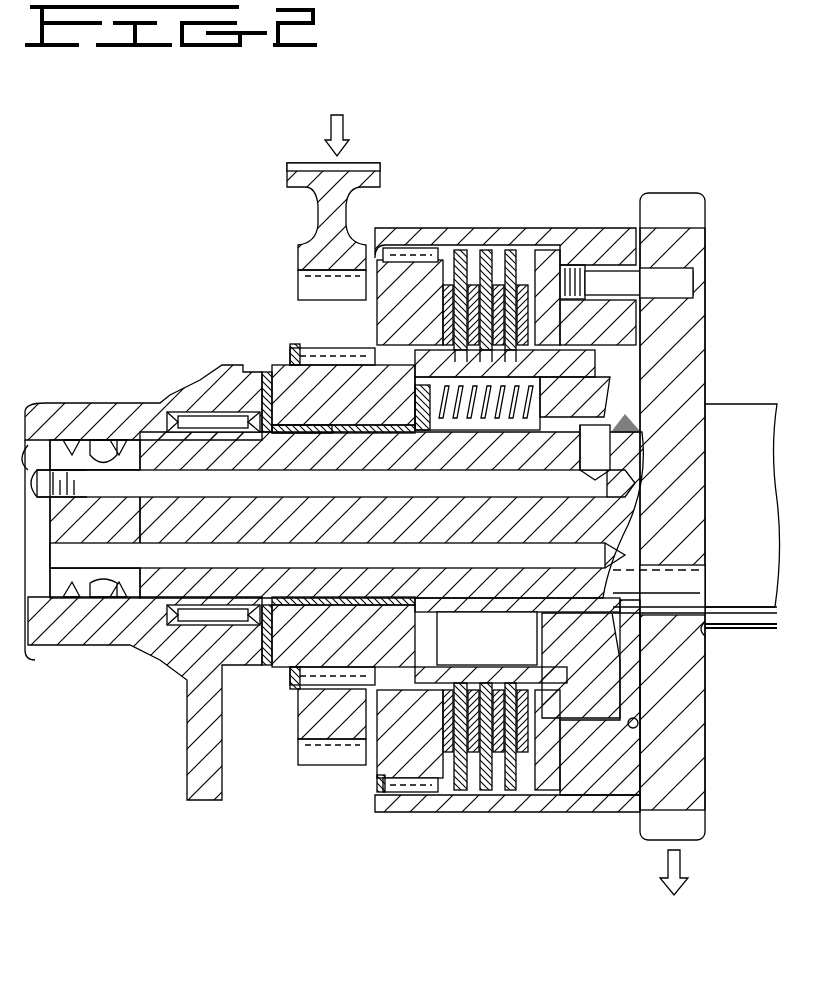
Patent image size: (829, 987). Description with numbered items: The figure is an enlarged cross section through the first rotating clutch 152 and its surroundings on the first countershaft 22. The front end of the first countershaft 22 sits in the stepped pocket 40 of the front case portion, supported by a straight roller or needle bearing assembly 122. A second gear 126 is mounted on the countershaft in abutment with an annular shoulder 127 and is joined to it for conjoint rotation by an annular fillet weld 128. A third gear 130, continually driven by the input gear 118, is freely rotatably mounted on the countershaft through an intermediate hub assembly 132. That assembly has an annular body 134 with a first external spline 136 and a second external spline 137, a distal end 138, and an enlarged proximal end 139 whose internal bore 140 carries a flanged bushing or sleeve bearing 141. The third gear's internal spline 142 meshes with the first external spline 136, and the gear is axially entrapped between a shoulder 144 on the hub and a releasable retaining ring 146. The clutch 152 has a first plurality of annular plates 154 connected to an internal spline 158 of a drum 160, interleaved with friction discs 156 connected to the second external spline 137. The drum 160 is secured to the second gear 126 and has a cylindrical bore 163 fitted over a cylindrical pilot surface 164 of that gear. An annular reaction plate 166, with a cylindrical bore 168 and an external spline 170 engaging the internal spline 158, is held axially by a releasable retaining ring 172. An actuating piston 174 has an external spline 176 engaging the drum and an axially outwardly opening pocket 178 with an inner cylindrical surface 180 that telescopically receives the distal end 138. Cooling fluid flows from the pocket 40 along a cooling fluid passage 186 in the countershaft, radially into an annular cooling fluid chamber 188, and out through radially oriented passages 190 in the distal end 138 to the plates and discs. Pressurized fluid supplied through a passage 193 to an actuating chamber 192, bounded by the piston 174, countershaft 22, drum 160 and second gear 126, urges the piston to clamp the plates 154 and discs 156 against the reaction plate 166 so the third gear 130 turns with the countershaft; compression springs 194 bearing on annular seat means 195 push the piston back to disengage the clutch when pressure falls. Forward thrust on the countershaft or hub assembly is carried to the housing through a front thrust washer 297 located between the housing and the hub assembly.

The first countershaft 22 is at (752, 412).
The stepped pocket 40 is at (40, 440).
The input gear 118 is at (318, 255).
The straight roller or needle bearing assembly 122 is at (175, 418).
The second gear 126 is at (645, 208).
The annular shoulder 127 is at (705, 632).
The annular fillet weld 128 is at (632, 422).
The third gear 130 is at (325, 765).
The intermediate hub assembly 132 is at (372, 434).
The annular body 134 is at (322, 434).
The first external spline 136 is at (318, 352).
The second external spline 137 is at (560, 360).
The distal end 138 is at (560, 385).
The enlarged proximal end 139 is at (362, 647).
The internal bore 140 is at (265, 605).
The flanged bushing or sleeve bearing 141 is at (355, 598).
The internal spline 142 is at (320, 685).
The shoulder 144 is at (320, 690).
The releasable retaining ring 146 is at (290, 357).
The first rotating clutch 152 is at (490, 228).
The first plurality of annular plates 154 is at (500, 250).
The friction discs 156 is at (500, 680).
The internal spline 158 is at (500, 792).
The drum 160 is at (620, 812).
The cylindrical bore 163 is at (640, 325).
The cylindrical pilot surface 164 is at (638, 723).
The annular reaction plate 166 is at (418, 268).
The cylindrical bore 168 is at (395, 352).
The external spline 170 is at (430, 792).
The releasable retaining ring 172 is at (380, 792).
The actuating piston 174 is at (622, 688).
The external spline 176 is at (545, 792).
The axially outwardly opening pocket 178 is at (590, 722).
The inner cylindrical surface 180 is at (705, 592).
The cooling fluid passage 186 is at (167, 561).
The annular cooling fluid chamber 188 is at (470, 598).
The radially oriented passages 190 is at (470, 670).
The actuating chamber 192 is at (612, 455).
The passage 193 is at (452, 492).
The compression springs 194 is at (470, 405).
The annular seat means 195 is at (436, 400).
The bearing 297 is at (230, 400).